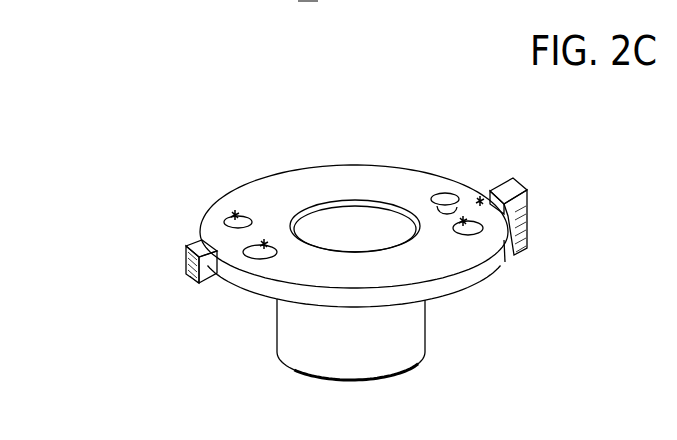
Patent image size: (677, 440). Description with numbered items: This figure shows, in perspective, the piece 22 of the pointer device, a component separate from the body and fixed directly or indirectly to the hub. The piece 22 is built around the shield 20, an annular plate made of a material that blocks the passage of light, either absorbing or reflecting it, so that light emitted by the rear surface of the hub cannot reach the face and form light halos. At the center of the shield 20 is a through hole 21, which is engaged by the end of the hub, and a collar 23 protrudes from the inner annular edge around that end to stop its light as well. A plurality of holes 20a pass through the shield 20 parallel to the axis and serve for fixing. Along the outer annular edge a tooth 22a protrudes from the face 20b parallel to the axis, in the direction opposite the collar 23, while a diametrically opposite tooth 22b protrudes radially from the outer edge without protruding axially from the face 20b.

The shield 20 is at (484, 228).
The holes 20a is at (258, 243).
The face 20b is at (479, 199).
The through hole 21 is at (400, 234).
The piece 22 is at (504, 269).
The tooth 22a is at (525, 200).
The tooth 22b is at (188, 262).
The collar 23 is at (333, 358).